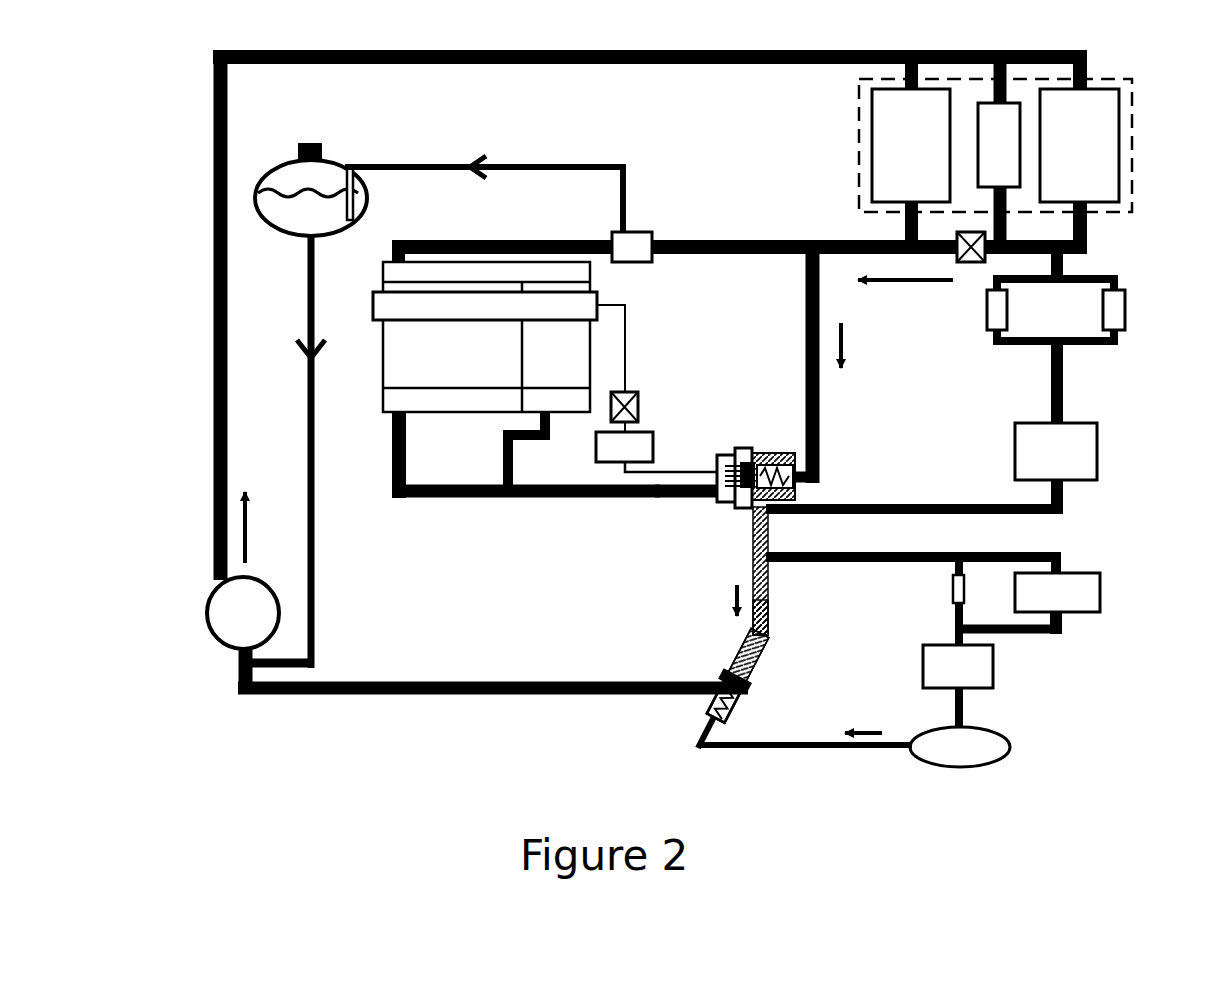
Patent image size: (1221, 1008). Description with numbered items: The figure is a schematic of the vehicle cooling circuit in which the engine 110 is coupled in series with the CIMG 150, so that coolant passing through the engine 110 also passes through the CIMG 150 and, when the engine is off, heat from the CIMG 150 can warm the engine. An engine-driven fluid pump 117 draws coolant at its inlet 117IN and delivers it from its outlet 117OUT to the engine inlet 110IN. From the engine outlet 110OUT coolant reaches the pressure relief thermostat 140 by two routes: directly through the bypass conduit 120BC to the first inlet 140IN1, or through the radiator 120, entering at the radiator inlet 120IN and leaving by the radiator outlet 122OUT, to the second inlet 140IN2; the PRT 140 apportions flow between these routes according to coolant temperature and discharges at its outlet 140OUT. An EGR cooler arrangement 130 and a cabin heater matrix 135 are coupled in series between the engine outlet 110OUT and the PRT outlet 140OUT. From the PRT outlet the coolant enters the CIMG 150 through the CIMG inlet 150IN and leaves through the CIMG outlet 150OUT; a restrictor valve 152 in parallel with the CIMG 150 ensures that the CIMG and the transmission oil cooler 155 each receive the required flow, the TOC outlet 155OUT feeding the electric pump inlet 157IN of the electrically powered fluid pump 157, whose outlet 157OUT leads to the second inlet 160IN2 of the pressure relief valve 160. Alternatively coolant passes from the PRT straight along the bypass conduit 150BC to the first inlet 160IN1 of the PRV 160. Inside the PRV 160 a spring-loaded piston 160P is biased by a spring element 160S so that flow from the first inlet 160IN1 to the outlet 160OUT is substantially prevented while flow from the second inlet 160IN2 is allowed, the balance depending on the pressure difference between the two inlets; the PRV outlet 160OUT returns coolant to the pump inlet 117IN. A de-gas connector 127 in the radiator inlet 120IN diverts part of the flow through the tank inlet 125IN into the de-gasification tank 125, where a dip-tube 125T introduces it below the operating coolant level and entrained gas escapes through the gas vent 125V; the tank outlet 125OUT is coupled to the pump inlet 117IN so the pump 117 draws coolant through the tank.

The engine 110 is at (852, 154).
The engine inlet 110IN is at (850, 57).
The engine outlet 110OUT is at (845, 247).
The engine-driven fluid pump 117 is at (232, 634).
The pump inlet 117IN is at (265, 692).
The pump outlet 117OUT is at (222, 553).
The radiator 120 is at (647, 338).
The radiator inlet 120IN is at (760, 252).
The bypass conduit 120BC is at (818, 390).
The radiator outlet conduit 122OUT is at (555, 494).
The de-gasification tank 125 is at (332, 160).
The gas vent 125V is at (308, 143).
The dip-tube 125T is at (356, 207).
The tank inlet 125IN is at (410, 165).
The tank outlet 125OUT is at (310, 283).
The de-gas connector 127 is at (640, 232).
The exhaust gas recirculation (EGR) cooler arrangement 130 is at (1138, 303).
The cabin heater matrix 135 is at (1138, 448).
The pressure relief thermostat (PRT) 140 is at (723, 452).
The first inlet of PRT 140IN1 is at (820, 452).
The second inlet of PRT 140IN2 is at (686, 494).
The PRT outlet 140OUT is at (772, 535).
The CIMG 150 is at (1102, 583).
The CIMG inlet conduit 150IN is at (1040, 555).
The CIMG outlet conduit 150OUT is at (1015, 632).
The bypass conduit 150BC is at (760, 575).
The restrictor valve 152 is at (953, 590).
The transmission oil cooler (TOC) 155 is at (923, 657).
The TOC cooler outlet conduit 155OUT is at (958, 705).
The electrically powered fluid pump 157 is at (1010, 747).
The electric pump inlet conduit 157IN is at (963, 722).
The electric pump outlet conduit 157OUT is at (877, 743).
The pressure relief valve (PRV) 160 is at (742, 658).
The spring-loaded piston 160P is at (722, 678).
The spring element 160S is at (735, 702).
The first inlet of PRV 160IN1 is at (765, 623).
The second inlet of PRV 160IN2 is at (748, 745).
The PRV outlet 160OUT is at (650, 694).